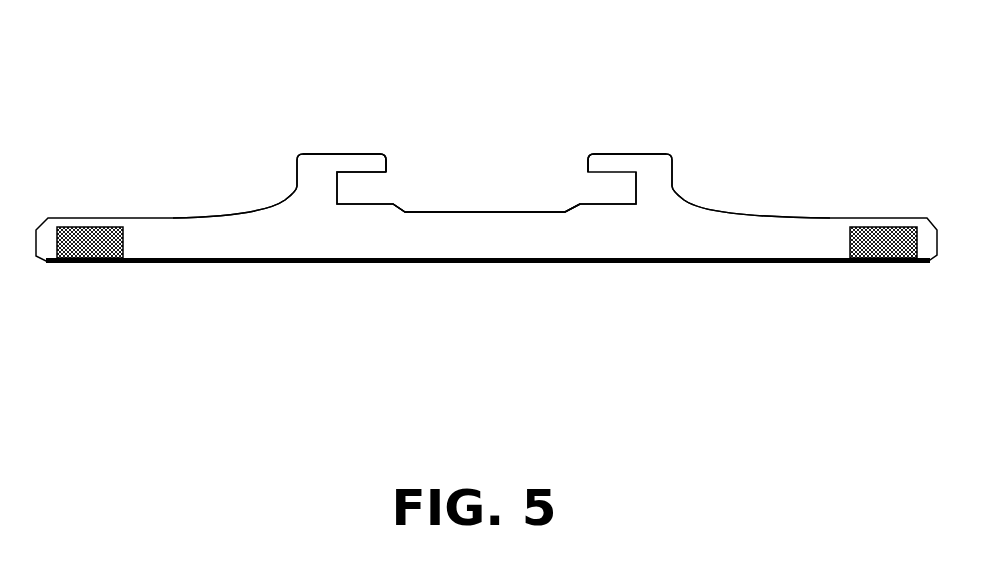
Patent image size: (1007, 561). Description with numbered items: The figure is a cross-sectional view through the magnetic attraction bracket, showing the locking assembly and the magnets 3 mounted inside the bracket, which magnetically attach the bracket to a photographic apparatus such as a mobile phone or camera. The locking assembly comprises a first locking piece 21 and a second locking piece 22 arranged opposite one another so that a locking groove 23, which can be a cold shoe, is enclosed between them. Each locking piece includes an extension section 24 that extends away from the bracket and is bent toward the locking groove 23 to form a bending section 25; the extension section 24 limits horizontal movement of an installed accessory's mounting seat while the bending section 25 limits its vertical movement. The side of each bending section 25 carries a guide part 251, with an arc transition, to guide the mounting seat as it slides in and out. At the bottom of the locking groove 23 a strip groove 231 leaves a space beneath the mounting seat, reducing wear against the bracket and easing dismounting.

The magnet 3 is at (100, 262).
The first locking piece 21 is at (342, 158).
The second locking piece 22 is at (605, 158).
The locking groove 23 is at (438, 180).
The strip groove 231 is at (493, 213).
The extension section 24 is at (317, 185).
The bending section 25 is at (305, 158).
The guide part 251 is at (381, 153).